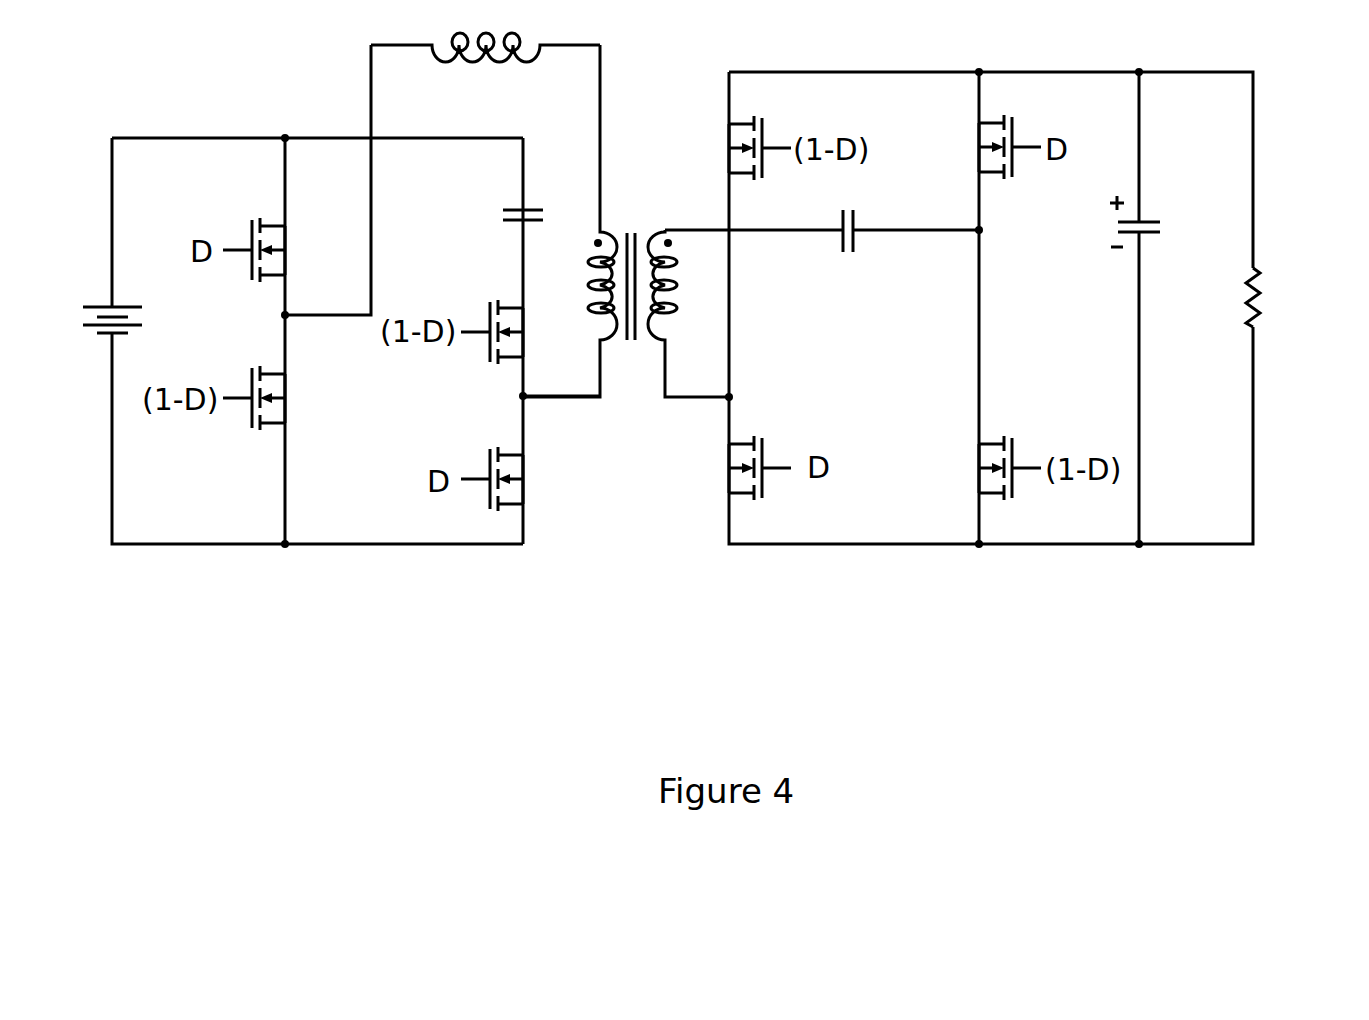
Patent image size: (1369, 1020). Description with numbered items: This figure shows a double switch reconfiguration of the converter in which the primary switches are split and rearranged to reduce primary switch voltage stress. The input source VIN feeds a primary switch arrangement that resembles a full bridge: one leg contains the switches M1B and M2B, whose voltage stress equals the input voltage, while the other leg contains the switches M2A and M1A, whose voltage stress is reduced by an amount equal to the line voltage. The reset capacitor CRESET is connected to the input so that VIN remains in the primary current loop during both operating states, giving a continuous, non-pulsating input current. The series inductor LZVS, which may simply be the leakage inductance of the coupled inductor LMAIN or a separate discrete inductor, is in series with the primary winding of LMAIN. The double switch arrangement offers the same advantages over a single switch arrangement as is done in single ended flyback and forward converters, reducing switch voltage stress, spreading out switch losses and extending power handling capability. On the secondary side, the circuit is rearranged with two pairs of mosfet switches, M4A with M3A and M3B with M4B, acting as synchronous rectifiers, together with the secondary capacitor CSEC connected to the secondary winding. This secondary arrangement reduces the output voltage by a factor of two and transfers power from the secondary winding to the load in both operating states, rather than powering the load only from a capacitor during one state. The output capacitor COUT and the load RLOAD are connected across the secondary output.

The input source VIN is at (141, 327).
The primary switch M1B is at (287, 250).
The primary switch M2B is at (288, 398).
The primary switch M2A is at (525, 332).
The primary switch M1A is at (525, 479).
The reset capacitor CRESET is at (470, 219).
The series inductor LZVS is at (485, 31).
The coupled inductor LMAIN is at (626, 221).
The secondary switch M4A is at (724, 148).
The secondary switch M3A is at (724, 468).
The secondary capacitor CSEC is at (850, 250).
The secondary switch M3B is at (977, 147).
The secondary switch M4B is at (977, 468).
The output capacitor COUT is at (1174, 223).
The load RLOAD is at (1298, 299).